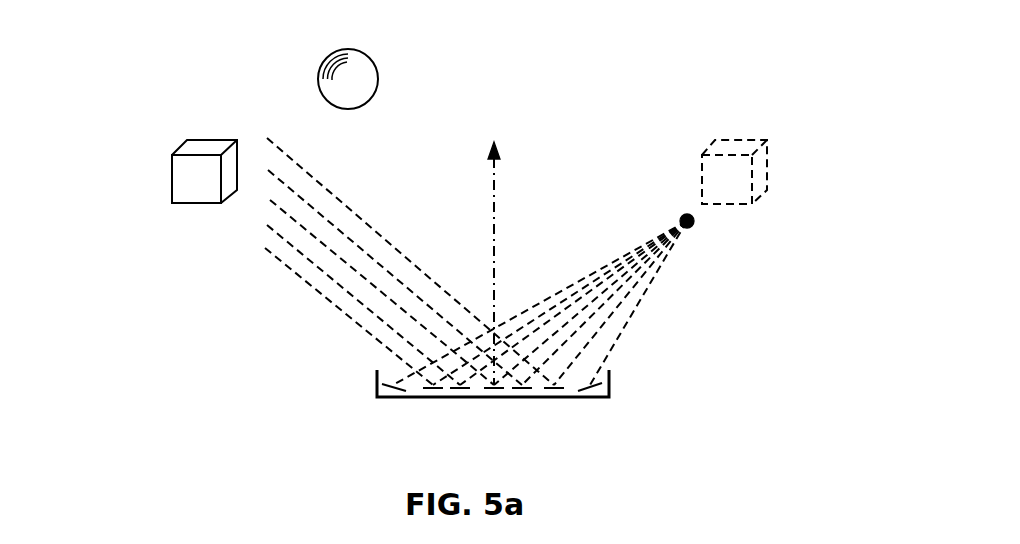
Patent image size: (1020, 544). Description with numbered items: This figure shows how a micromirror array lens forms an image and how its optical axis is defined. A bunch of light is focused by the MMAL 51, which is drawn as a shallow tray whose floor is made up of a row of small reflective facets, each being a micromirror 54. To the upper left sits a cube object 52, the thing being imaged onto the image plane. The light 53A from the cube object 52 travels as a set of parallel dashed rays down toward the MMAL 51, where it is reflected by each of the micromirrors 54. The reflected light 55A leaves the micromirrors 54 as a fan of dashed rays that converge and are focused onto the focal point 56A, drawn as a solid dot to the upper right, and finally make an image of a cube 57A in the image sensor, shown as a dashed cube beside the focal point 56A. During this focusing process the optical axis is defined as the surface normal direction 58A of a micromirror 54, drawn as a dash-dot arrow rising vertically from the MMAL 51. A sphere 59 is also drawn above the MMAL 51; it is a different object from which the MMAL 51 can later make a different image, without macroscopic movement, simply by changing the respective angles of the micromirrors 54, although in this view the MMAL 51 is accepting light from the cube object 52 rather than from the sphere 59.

The MMAL 51 is at (372, 391).
The cube object 52 is at (168, 177).
The light from the object 53A is at (297, 287).
The micromirror 54 is at (600, 390).
The reflected light 55A is at (637, 318).
The focal point 56A is at (695, 227).
The image of a cube 57A is at (768, 163).
The surface normal direction 58A is at (500, 190).
The sphere 59 is at (378, 77).